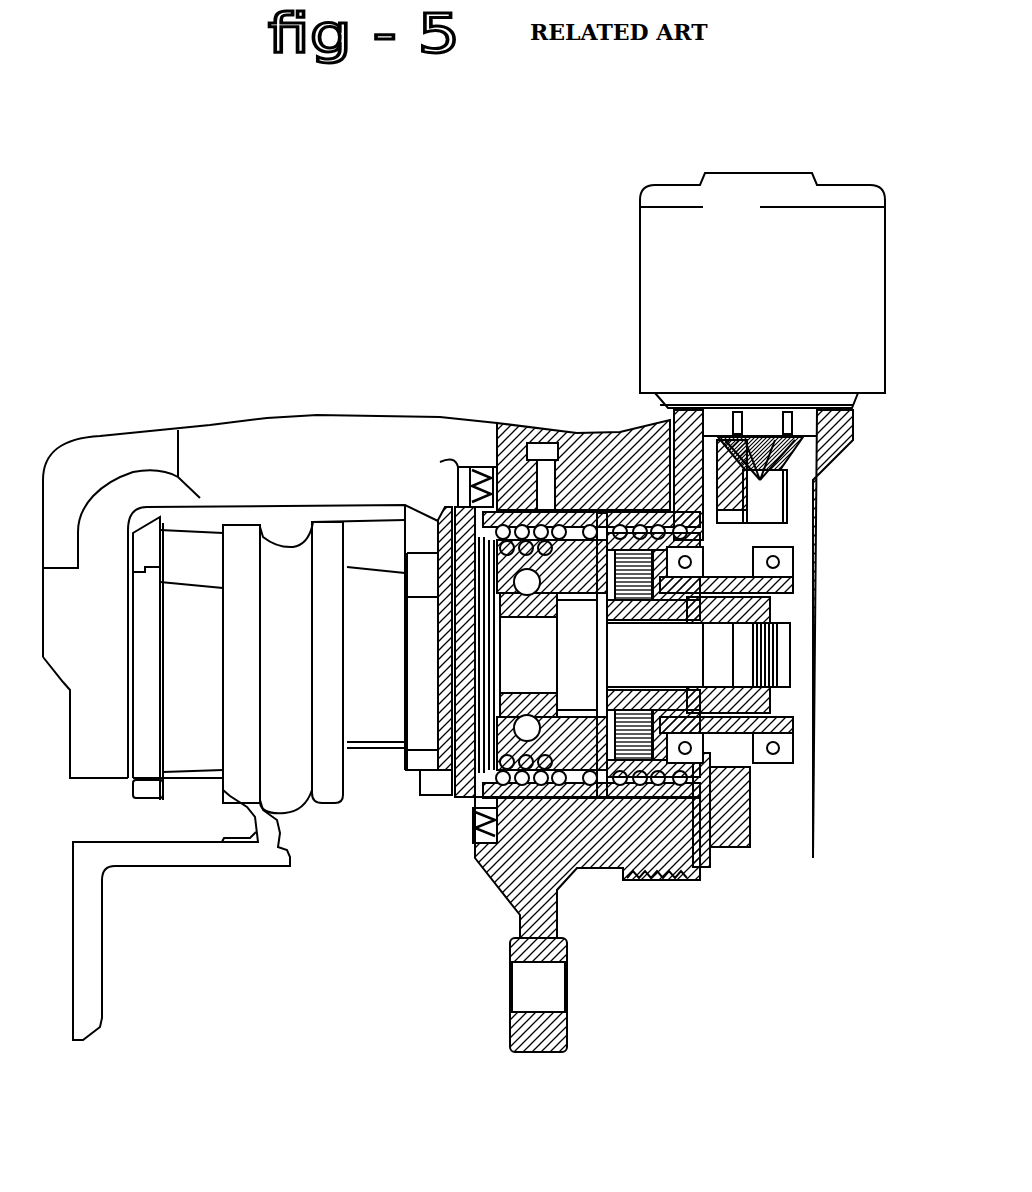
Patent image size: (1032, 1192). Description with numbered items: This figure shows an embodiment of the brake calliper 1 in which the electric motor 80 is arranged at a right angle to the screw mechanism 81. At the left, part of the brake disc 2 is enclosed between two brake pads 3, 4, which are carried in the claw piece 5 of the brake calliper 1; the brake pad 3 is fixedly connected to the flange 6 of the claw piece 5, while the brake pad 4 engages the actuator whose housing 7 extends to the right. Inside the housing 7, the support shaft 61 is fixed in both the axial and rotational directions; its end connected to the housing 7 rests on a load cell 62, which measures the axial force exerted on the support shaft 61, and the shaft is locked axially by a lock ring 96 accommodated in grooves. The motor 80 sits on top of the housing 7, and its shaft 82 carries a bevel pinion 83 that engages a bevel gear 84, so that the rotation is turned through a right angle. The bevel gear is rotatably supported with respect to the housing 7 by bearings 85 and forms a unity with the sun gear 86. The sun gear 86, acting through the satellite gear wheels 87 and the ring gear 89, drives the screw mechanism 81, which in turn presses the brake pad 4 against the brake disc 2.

The brake calliper 1 is at (344, 392).
The brake disc 2 is at (270, 875).
The brake pad 3 is at (182, 547).
The brake pad 4 is at (385, 735).
The claw piece 5 is at (265, 433).
The flange 6 is at (124, 437).
The housing 7 is at (573, 432).
The support shaft 61 is at (731, 669).
The load cell 62 is at (427, 497).
The motor 80 is at (652, 235).
The screw mechanism 81 is at (460, 792).
The shaft 82 is at (760, 423).
The bevel pinion 83 is at (785, 455).
The bevel gear 84 is at (757, 483).
The bearings 85 is at (772, 577).
The sun gear 86 is at (610, 612).
The satellite gear wheels 87 is at (651, 862).
The ring gear 89 is at (648, 512).
The lock ring 96 is at (770, 605).